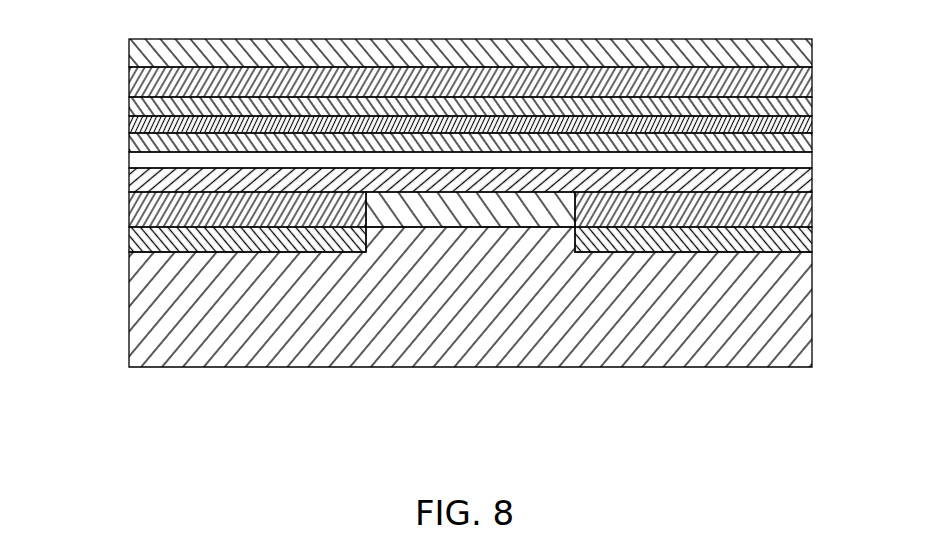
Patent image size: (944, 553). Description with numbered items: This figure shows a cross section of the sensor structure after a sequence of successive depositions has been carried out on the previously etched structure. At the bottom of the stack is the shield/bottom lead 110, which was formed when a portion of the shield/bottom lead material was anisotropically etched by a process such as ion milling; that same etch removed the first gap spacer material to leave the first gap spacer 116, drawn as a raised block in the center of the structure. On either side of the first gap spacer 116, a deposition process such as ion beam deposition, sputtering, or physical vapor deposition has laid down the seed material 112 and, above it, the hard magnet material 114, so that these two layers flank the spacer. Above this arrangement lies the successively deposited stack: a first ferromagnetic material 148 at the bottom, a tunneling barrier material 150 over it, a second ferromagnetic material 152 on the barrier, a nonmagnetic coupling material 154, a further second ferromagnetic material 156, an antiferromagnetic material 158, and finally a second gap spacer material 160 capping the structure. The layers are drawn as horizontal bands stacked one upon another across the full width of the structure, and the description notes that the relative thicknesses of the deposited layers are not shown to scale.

The shield/bottom lead 110 is at (491, 312).
The seed material 112 is at (812, 245).
The hard magnet material 114 is at (812, 208).
The first gap spacer 116 is at (493, 218).
The first ferromagnetic material 148 is at (128, 177).
The tunneling barrier material 150 is at (128, 163).
The second ferromagnetic material 152 is at (812, 147).
The nonmagnetic coupling material 154 is at (128, 123).
The second ferromagnetic material 156 is at (812, 109).
The antiferromagnetic material 158 is at (128, 85).
The second gap spacer material 160 is at (812, 62).